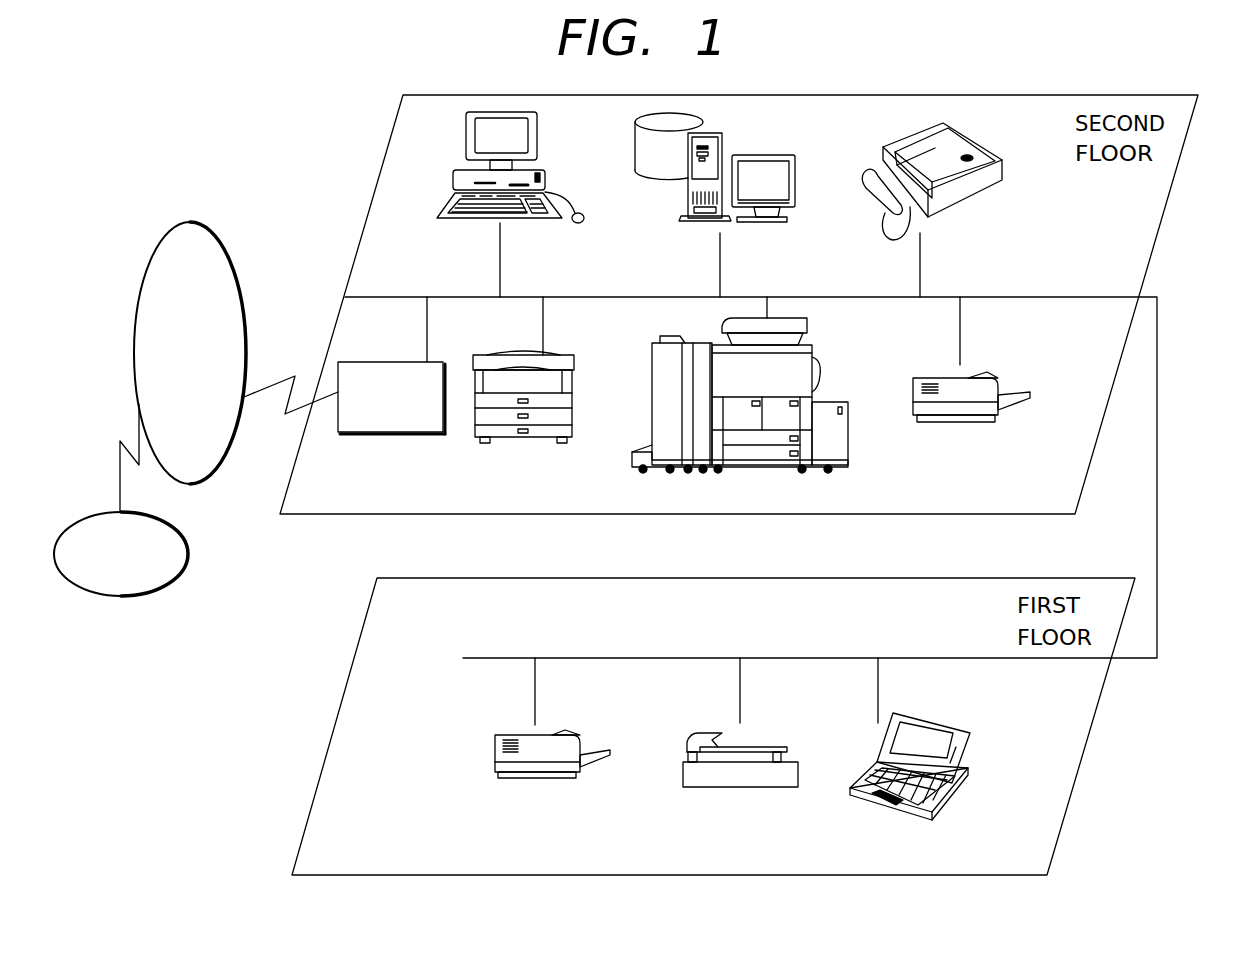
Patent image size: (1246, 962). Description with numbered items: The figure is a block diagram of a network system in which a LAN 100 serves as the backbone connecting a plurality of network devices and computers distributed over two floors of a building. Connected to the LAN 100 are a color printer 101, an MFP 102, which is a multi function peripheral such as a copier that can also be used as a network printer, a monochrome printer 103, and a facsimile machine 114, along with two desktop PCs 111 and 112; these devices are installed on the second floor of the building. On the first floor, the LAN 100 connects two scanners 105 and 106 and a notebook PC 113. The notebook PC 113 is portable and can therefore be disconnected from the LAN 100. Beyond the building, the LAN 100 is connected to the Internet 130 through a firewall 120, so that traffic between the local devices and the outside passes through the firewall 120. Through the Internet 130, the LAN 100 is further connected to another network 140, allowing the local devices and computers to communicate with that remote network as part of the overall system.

The LAN 100 is at (1157, 392).
The color printer 101 is at (521, 440).
The MFP 102 is at (760, 469).
The monochrome printer 103 is at (975, 423).
The scanner 105 is at (530, 779).
The scanner 106 is at (732, 789).
The desktop PC 111 is at (545, 172).
The desktop PC 112 is at (766, 154).
The notebook PC 113 is at (880, 808).
The facsimile machine 114 is at (985, 152).
The firewall 120 is at (396, 436).
The Internet 130 is at (218, 232).
The another network 140 is at (158, 590).